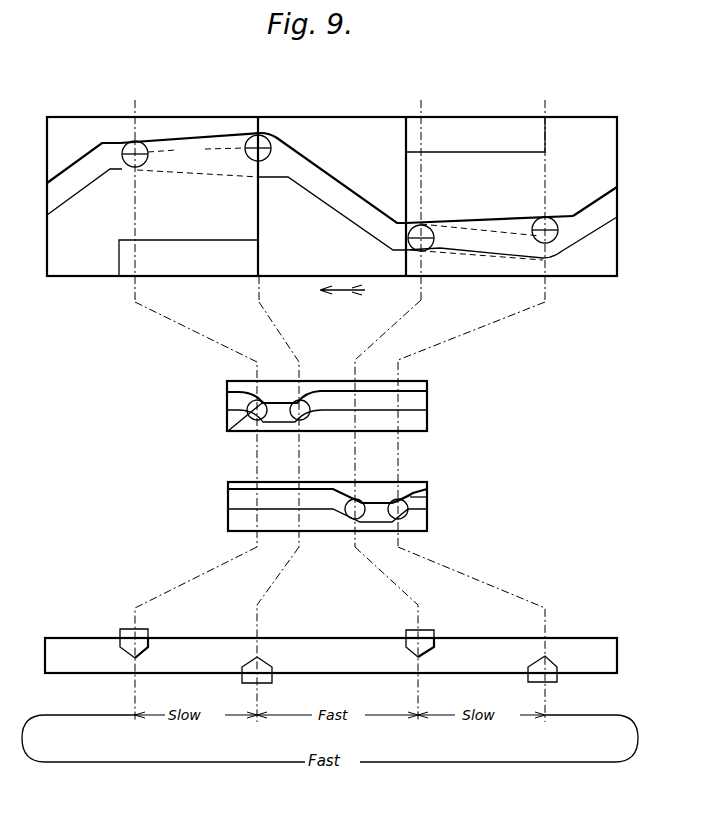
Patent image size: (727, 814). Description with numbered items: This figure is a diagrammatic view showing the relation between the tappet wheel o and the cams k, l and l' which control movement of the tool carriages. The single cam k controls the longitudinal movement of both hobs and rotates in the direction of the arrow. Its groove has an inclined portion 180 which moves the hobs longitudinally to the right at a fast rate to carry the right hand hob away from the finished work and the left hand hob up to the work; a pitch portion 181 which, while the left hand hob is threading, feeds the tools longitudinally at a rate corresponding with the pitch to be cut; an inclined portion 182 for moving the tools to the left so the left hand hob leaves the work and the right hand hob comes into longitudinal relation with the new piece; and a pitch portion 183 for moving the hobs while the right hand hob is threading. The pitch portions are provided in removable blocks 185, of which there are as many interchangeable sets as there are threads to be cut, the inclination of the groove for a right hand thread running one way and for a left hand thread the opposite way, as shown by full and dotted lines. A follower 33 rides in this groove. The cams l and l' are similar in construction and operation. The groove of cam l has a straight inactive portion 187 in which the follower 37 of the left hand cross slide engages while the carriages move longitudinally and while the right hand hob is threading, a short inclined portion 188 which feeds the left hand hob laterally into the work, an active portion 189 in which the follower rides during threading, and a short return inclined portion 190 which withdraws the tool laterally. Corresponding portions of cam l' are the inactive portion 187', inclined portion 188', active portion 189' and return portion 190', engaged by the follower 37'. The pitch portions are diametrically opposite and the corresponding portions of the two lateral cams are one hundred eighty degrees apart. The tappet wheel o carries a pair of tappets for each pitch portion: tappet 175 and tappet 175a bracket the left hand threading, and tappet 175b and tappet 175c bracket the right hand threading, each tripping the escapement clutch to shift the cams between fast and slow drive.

The cam k is at (607, 151).
The removable pitch block 185 is at (180, 226).
The inclined portion 182 is at (78, 197).
The pitch portion 183 is at (213, 130).
The inclined portion 180 is at (323, 170).
The pitch portion 181 is at (468, 218).
The follower 33 is at (340, 197).
The cam l' is at (348, 406).
The inactive portion 187' is at (351, 388).
The inclined portion 188' is at (295, 415).
The active portion 189' is at (270, 387).
The return inclined portion 190' is at (310, 431).
The follower 37' is at (230, 427).
The cam l is at (351, 506).
The inactive portion 187 is at (327, 525).
The inclined portion 188 is at (327, 539).
The active portion 189 is at (368, 482).
The return inclined portion 190 is at (415, 527).
The follower 37 is at (447, 486).
The tappet wheel o is at (620, 652).
The tappet 175b is at (140, 635).
The tappet 175c is at (298, 638).
The tappet 175 is at (425, 636).
The tappet 175a is at (530, 680).